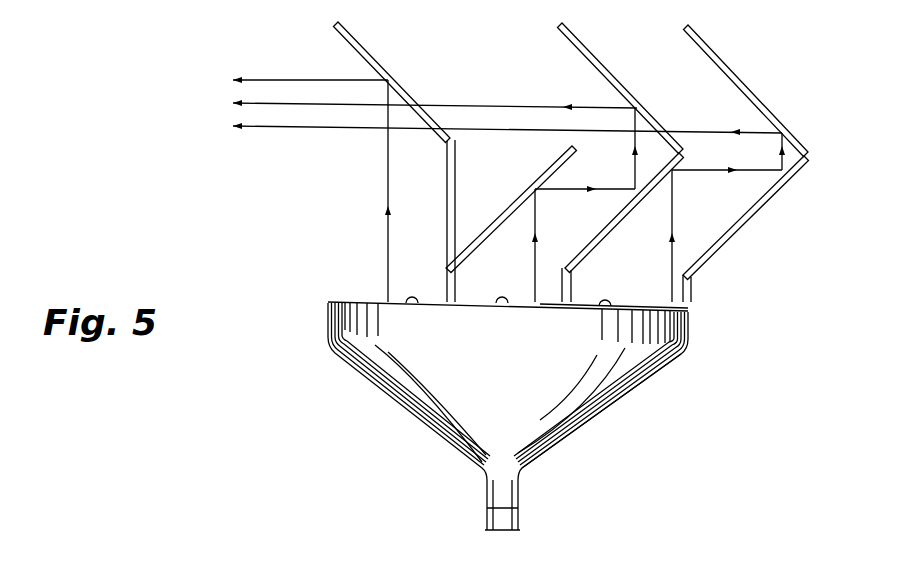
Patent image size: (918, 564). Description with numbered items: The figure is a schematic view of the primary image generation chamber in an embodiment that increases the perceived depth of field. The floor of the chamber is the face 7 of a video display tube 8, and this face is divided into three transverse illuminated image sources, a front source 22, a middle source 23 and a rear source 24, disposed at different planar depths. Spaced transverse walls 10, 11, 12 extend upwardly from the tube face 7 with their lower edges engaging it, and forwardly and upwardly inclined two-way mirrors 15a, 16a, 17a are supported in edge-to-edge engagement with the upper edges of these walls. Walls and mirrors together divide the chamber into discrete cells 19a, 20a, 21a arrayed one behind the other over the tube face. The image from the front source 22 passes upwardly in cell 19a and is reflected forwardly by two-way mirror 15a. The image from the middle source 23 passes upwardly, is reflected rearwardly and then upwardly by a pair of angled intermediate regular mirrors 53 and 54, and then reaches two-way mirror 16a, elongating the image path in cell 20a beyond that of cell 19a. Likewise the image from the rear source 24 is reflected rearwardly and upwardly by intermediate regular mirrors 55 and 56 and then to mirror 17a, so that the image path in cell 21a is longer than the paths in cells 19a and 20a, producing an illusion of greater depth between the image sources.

The tube face 7 is at (358, 298).
The video display tube 8 is at (590, 420).
The transverse wall 10 is at (456, 284).
The transverse wall 11 is at (572, 285).
The transverse wall 12 is at (692, 295).
The two-way mirror 15a is at (362, 37).
The two-way mirror 16a is at (604, 64).
The two-way mirror 17a is at (752, 84).
The cell 19a is at (428, 191).
The cell 20a is at (467, 81).
The cell 21a is at (702, 97).
The front image source 22 is at (414, 308).
The middle image source 23 is at (500, 308).
The rear image source 24 is at (600, 310).
The intermediate regular mirror 53 is at (495, 216).
The intermediate regular mirror 54 is at (594, 240).
The intermediate regular mirror 55 is at (598, 246).
The intermediate regular mirror 56 is at (722, 228).